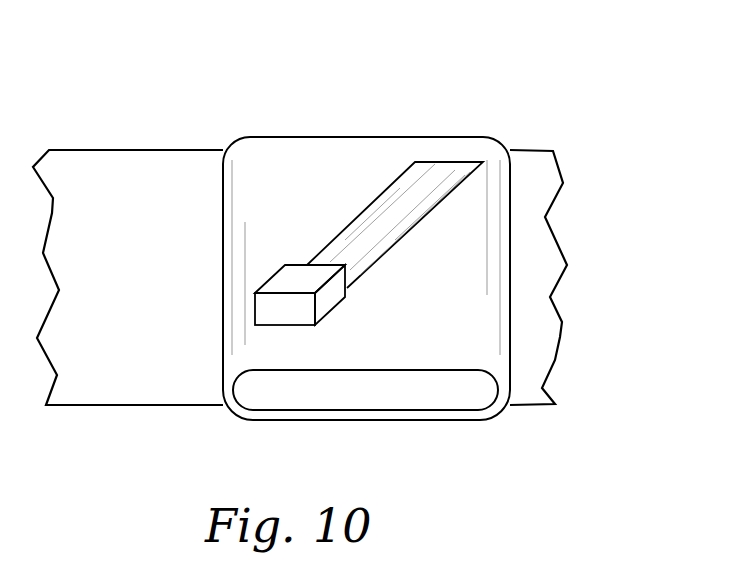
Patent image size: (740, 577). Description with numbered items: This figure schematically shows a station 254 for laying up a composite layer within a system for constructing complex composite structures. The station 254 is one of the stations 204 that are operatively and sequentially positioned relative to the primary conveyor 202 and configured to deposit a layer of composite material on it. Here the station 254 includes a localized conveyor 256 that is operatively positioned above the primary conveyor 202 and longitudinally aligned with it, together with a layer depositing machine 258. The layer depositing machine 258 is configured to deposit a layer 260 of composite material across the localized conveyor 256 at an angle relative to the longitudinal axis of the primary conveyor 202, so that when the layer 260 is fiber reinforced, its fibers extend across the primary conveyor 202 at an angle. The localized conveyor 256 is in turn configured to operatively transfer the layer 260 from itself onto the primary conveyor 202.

The conveyor 202 is at (107, 150).
The station 204 is at (580, 82).
The station 254 is at (514, 65).
The localized conveyor 256 is at (320, 137).
The layer depositing machine 258 is at (273, 272).
The layer 260 is at (348, 222).